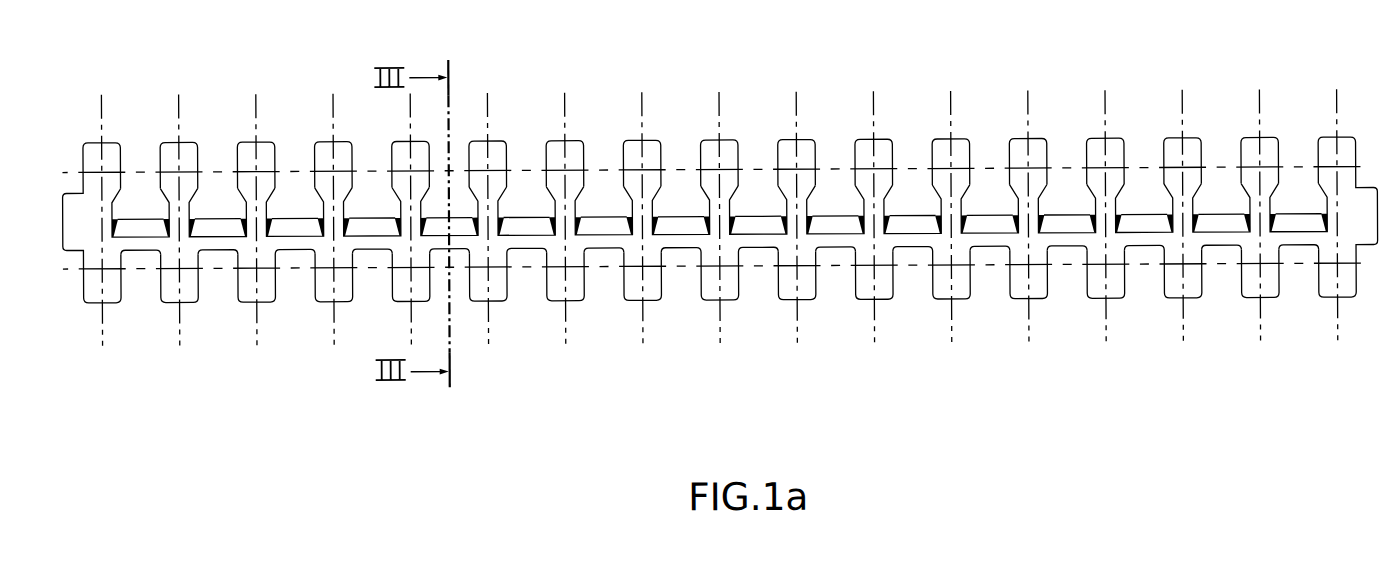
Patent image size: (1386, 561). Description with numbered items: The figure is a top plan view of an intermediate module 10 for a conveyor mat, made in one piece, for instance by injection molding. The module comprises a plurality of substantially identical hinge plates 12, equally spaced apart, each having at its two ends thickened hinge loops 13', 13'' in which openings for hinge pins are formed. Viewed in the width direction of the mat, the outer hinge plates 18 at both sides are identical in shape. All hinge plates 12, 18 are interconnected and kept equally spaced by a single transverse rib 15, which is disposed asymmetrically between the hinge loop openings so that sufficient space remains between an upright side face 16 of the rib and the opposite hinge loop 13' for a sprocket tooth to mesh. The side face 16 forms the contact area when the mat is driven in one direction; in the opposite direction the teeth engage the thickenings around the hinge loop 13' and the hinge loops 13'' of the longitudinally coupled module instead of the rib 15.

The intermediate module 10 is at (198, 375).
The hinge plate 12 is at (188, 209).
The hinge loop 13' is at (950, 112).
The hinge loop 13'' is at (990, 312).
The transverse rib 15 is at (297, 241).
The upright side face of the rib 16 is at (283, 221).
The outer hinge plate 18 is at (80, 220).